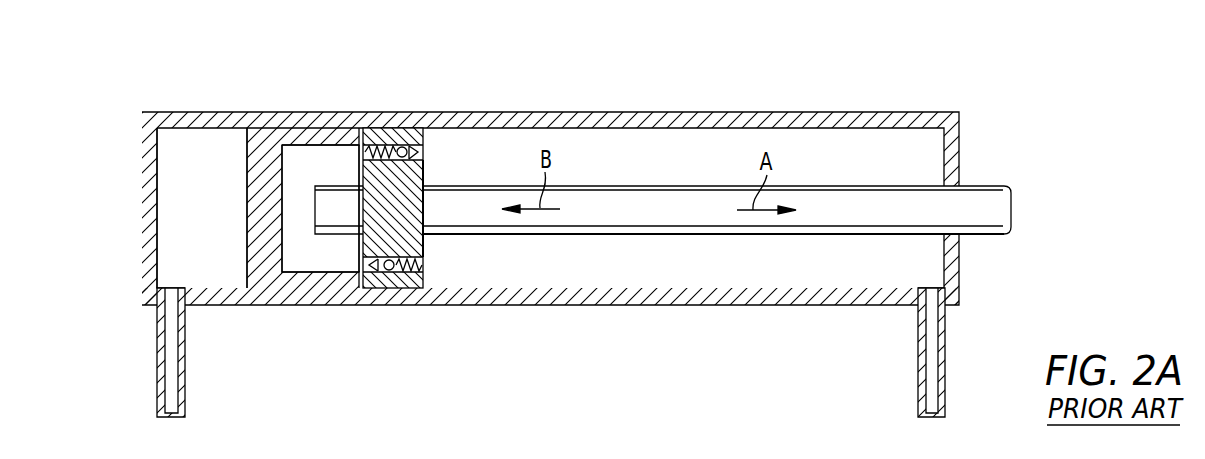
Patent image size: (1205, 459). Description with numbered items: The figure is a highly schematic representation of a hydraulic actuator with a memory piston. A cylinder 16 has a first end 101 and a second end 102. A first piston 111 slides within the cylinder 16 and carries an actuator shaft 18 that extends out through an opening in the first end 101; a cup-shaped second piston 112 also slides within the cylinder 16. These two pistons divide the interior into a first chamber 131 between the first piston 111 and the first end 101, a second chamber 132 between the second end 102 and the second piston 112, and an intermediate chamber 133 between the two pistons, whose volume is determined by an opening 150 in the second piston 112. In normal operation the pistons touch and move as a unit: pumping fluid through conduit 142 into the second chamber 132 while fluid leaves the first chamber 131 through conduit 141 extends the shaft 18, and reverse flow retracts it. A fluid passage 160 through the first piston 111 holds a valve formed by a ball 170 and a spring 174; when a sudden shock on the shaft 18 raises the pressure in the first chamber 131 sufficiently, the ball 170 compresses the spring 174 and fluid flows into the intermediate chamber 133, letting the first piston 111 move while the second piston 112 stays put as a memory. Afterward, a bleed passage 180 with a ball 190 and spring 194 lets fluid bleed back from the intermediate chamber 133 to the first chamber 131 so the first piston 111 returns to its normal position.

The cylinder 16 is at (548, 112).
The actuator shaft 18 is at (633, 186).
The first end 101 is at (960, 150).
The second end 102 is at (148, 146).
The first piston 111 is at (424, 175).
The second piston 112 is at (245, 195).
The first chamber 131 is at (672, 273).
The second chamber 132 is at (177, 245).
The intermediate chamber 133 is at (362, 170).
The conduit 141 is at (933, 372).
The conduit 142 is at (172, 375).
The opening 150 is at (300, 254).
The fluid passage 160 is at (424, 154).
The ball 170 is at (398, 147).
The spring 174 is at (365, 147).
The bleed passage 180 is at (369, 268).
The ball 190 is at (389, 268).
The spring 194 is at (424, 265).